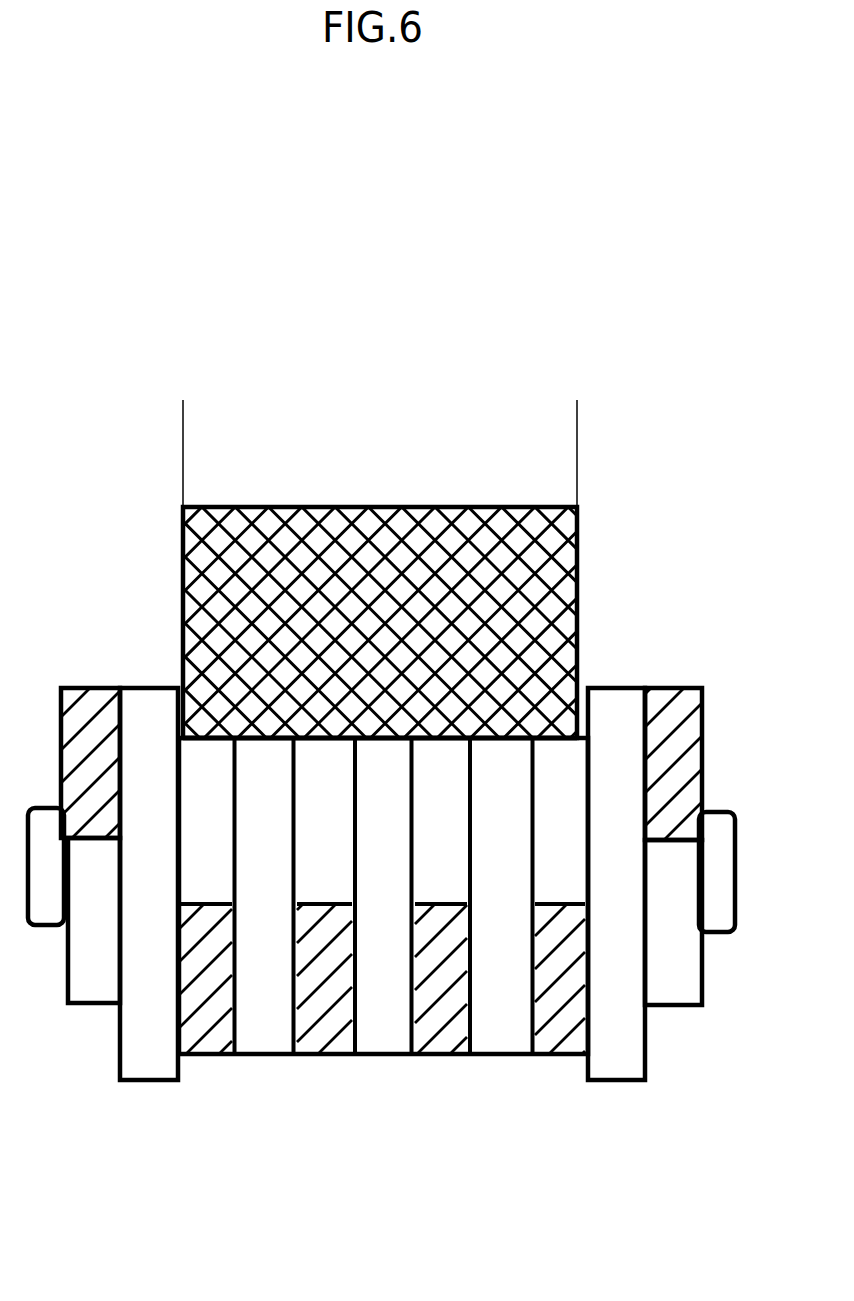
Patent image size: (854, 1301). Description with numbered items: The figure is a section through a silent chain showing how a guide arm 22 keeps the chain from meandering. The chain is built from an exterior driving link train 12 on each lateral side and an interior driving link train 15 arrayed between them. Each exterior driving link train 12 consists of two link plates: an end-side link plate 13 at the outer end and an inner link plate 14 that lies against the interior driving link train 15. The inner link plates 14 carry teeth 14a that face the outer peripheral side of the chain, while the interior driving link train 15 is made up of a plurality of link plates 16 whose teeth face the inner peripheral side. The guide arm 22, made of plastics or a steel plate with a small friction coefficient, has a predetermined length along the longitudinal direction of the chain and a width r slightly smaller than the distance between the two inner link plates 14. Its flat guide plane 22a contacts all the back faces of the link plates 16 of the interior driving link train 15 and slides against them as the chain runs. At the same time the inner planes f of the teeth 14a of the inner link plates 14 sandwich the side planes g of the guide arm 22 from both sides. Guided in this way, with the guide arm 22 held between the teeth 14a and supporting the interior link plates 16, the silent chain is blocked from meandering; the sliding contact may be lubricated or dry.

The exterior driving link train 12 is at (384, 920).
The end-side link plate 13 is at (93, 1000).
The inner link plate 14 is at (155, 1070).
The teeth of inner link plate 14a is at (135, 686).
The interior driving link train 15 is at (383, 969).
The link plate of interior driving link train 16 is at (320, 1060).
The guide arm 22 is at (453, 537).
The guide plane 22a is at (430, 742).
The inner plane of tooth f is at (193, 707).
The side plane of guide arm g is at (182, 670).
The width of guide arm r is at (574, 447).